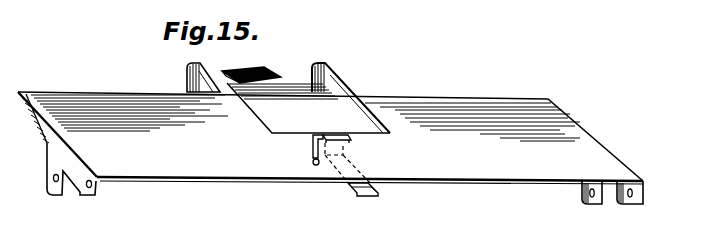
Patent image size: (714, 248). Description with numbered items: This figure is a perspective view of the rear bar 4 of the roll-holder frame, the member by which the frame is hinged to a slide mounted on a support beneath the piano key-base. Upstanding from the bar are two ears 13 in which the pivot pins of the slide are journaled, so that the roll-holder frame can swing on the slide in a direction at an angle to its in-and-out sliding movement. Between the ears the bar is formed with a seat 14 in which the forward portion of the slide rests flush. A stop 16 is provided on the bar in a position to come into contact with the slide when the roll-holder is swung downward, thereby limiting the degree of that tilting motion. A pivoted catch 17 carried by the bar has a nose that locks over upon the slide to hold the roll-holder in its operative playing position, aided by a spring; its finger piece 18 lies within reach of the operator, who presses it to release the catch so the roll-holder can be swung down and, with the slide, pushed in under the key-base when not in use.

The rear bar 4 is at (330, 138).
The ears 13 is at (184, 65).
The seat 14 is at (308, 108).
The stop 16 is at (247, 74).
The catch 17 is at (333, 134).
The finger piece 18 is at (363, 188).